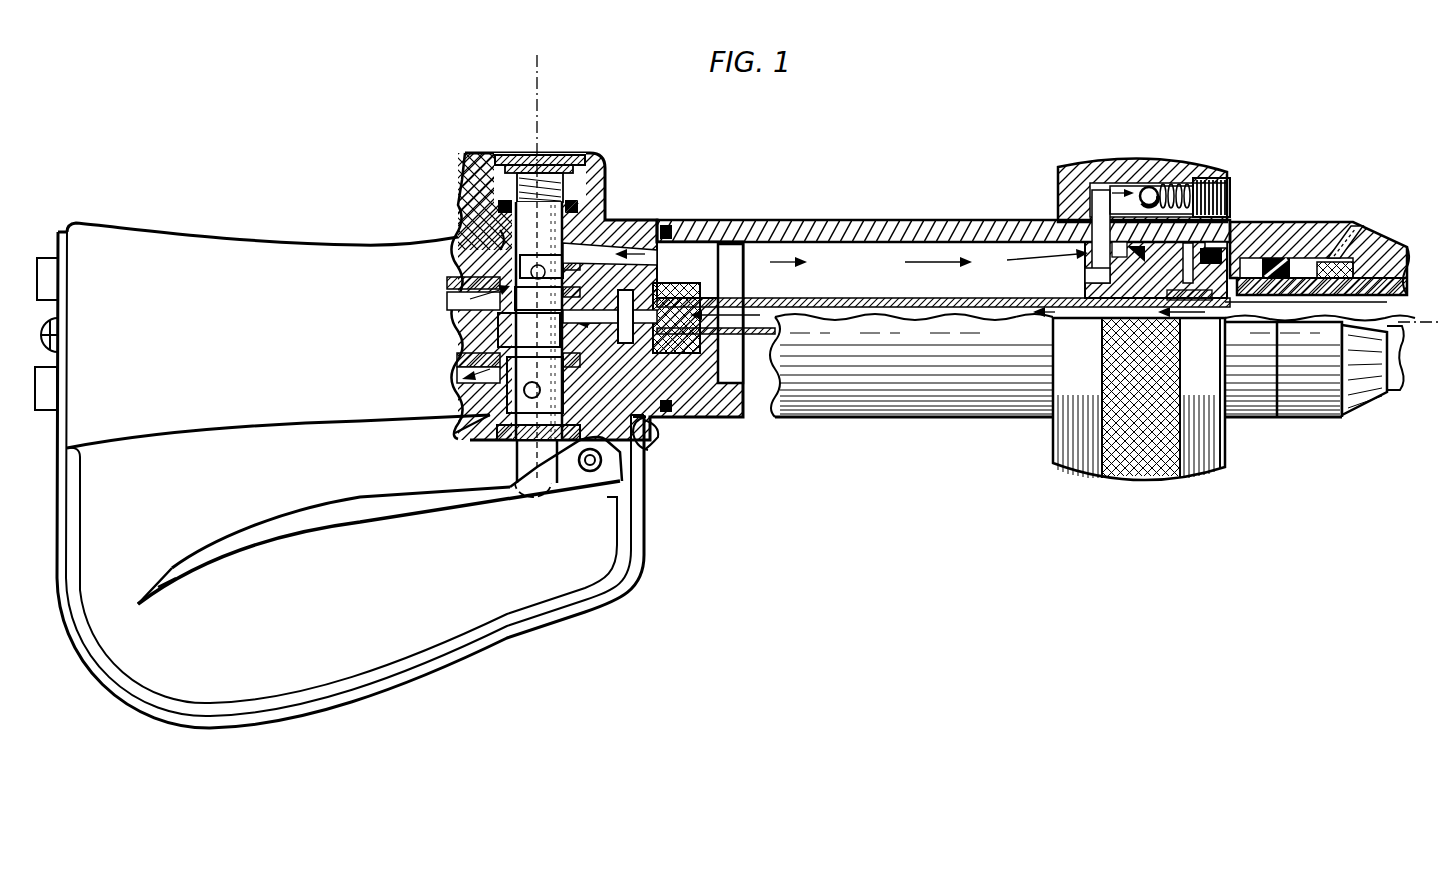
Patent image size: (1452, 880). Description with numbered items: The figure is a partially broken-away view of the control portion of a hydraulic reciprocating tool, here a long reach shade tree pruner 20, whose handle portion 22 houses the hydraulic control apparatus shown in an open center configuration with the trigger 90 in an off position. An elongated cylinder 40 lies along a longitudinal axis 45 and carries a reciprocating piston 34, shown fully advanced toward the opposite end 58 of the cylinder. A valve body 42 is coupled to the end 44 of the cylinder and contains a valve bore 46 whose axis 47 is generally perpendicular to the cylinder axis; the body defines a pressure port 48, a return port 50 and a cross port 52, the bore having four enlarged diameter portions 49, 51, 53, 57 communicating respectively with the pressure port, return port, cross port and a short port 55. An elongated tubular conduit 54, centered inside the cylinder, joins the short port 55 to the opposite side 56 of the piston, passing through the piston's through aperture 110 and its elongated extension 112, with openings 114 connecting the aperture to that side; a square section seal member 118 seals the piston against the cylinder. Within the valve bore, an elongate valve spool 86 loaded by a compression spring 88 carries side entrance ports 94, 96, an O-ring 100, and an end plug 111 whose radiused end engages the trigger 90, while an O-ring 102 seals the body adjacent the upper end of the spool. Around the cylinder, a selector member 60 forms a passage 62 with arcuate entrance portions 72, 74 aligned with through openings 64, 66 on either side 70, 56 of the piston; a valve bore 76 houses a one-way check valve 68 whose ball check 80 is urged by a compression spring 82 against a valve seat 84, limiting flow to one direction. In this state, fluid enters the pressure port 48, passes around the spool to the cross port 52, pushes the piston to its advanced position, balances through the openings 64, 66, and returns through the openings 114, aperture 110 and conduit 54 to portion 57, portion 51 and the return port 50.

The long reach shade tree pruner 20 is at (705, 548).
The handle portion 22 is at (815, 472).
The reciprocating piston 34 is at (1080, 272).
The elongated cylinder 40 is at (762, 220).
The valve body 42 is at (598, 150).
The end of cylinder 44 is at (650, 220).
The longitudinal axis 45 is at (1434, 322).
The valve bore 46 is at (497, 226).
The axis 47 is at (540, 80).
The pressure port 48 is at (517, 271).
The enlarged diameter portion 49 is at (460, 297).
The return port 50 is at (470, 358).
The enlarged diameter portion 51 is at (470, 376).
The cross port 52 is at (743, 280).
The enlarged diameter portion 53 is at (610, 221).
The elongated tubular conduit 54 is at (866, 298).
The short port 55 is at (660, 416).
The opposite side of piston 56 is at (1264, 258).
The enlarged diameter portion 57 is at (498, 326).
The opposite end of cylinder 58 is at (1344, 236).
The selector member 60 is at (1200, 483).
The passage 62 is at (1104, 172).
The through openings 64 is at (1100, 214).
The through openings 66 is at (1232, 246).
The one-way check valve 68 is at (1193, 181).
The side of piston 70 is at (1088, 283).
The entrance portion 72 is at (1112, 178).
The entrance portion 74 is at (1222, 242).
The valve bore 76 is at (1130, 188).
The ball check 80 is at (1171, 184).
The compression spring 82 is at (1230, 170).
The valve seat 84 is at (1148, 187).
The valve spool 86 is at (585, 186).
The compression spring 88 is at (532, 157).
The trigger 90 is at (240, 540).
The side entrance port 94 is at (525, 393).
The side entrance port 96 is at (500, 236).
The O-ring 100 is at (455, 433).
The O-ring 102 is at (500, 198).
The through aperture 110 is at (1193, 320).
The end plug 111 is at (515, 468).
The elongated extension 112 is at (1380, 286).
The openings 114 is at (1295, 304).
The square section seal member 118 is at (1100, 226).